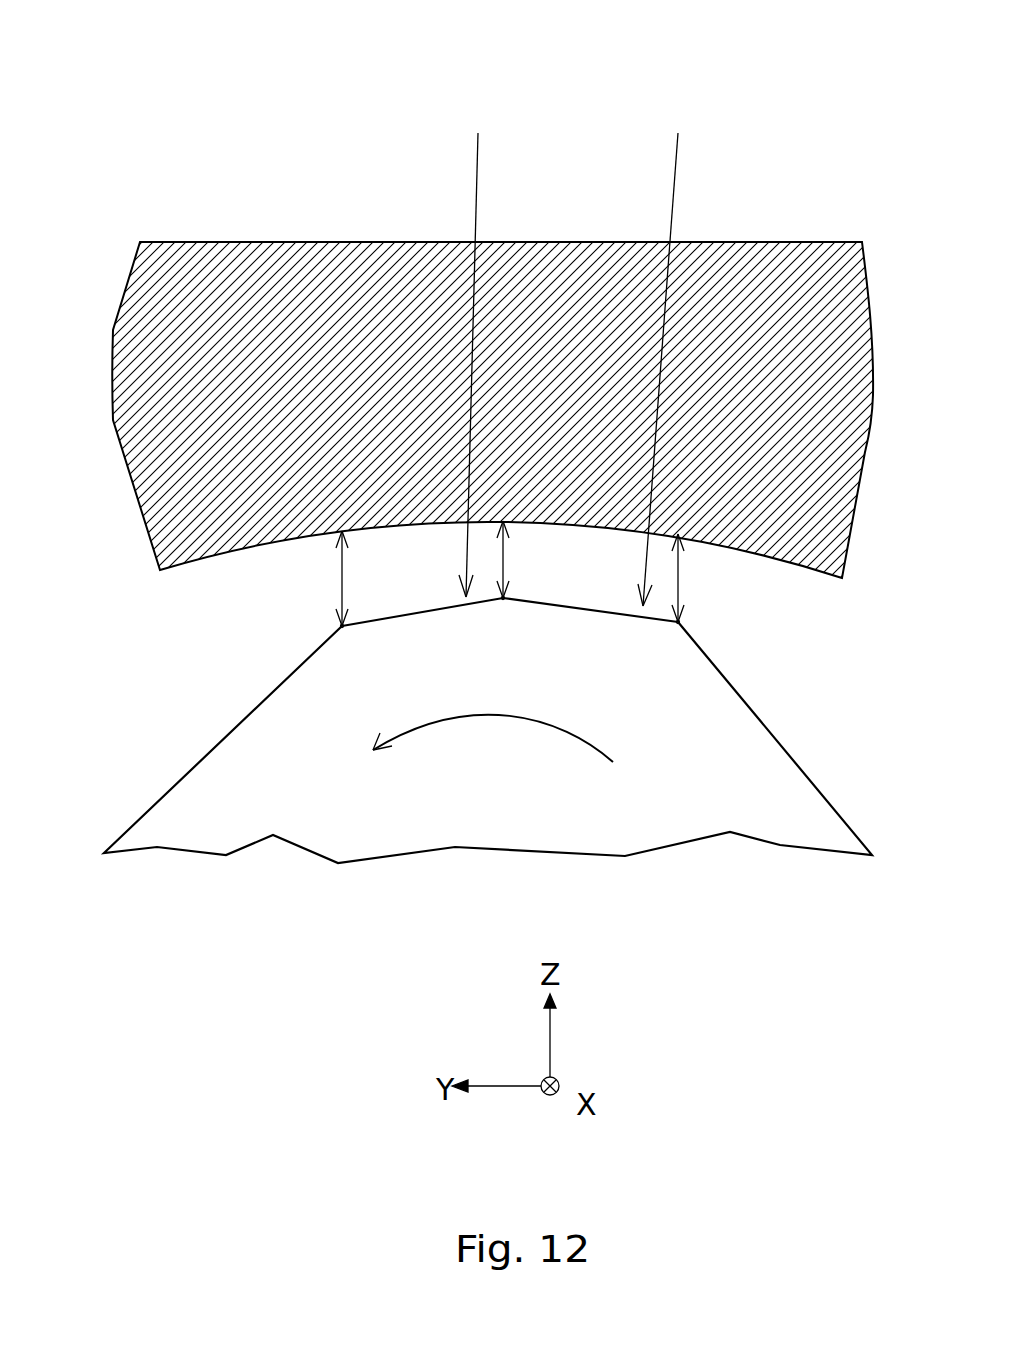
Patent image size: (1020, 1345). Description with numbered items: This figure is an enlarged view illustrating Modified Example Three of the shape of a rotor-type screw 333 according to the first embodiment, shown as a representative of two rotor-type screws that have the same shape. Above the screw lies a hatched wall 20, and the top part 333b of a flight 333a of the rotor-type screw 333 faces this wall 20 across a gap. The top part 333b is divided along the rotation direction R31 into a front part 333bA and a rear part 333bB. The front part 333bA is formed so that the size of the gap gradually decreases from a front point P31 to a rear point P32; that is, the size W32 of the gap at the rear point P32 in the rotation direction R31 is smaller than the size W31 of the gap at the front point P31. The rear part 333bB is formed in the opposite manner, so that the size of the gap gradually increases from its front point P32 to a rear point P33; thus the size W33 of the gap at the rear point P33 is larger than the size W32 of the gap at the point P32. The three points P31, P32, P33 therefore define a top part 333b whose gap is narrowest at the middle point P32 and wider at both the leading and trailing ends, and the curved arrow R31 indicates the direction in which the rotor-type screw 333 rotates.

The workpiece 20 is at (190, 257).
The rotor-type screw 333 is at (220, 914).
The flight 333a is at (340, 626).
The top part 333b is at (722, 82).
The front part 333bA is at (472, 344).
The rear part 333bB is at (664, 347).
The front point P31 is at (340, 625).
The rear point P32 is at (505, 597).
The rear point P33 is at (680, 622).
The size of gap W31 is at (363, 578).
The size of gap W32 is at (525, 559).
The size of gap W33 is at (701, 578).
The rotation direction R31 is at (493, 738).